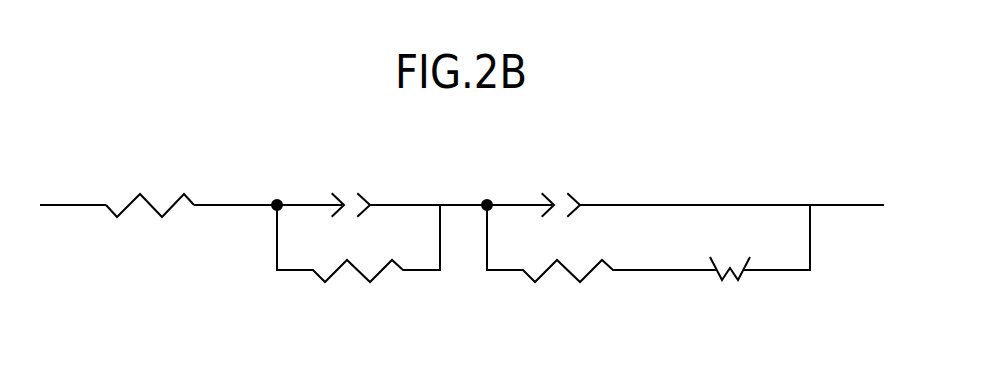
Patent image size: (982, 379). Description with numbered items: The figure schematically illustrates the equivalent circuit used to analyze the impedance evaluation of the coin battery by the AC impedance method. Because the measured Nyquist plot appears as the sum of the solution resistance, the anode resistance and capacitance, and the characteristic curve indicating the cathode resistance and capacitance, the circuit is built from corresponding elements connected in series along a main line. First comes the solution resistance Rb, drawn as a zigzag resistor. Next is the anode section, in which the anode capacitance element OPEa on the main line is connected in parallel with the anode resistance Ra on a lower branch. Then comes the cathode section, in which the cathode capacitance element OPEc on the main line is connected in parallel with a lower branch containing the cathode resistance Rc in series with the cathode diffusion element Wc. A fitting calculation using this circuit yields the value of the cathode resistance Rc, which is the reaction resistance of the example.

The solution resistance Rb is at (150, 189).
The anode capacitance element OPEa is at (358, 189).
The anode resistance Ra is at (358, 243).
The cathode capacitance element OPEc is at (648, 189).
The cathode resistance Rc is at (601, 243).
The cathode diffusion element Wc is at (760, 253).